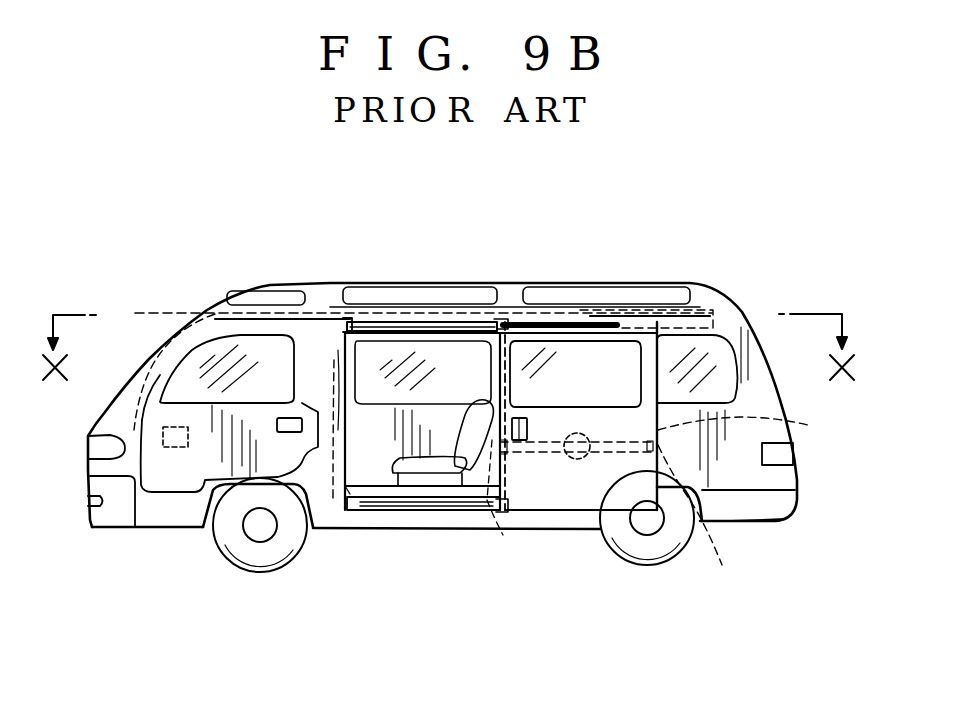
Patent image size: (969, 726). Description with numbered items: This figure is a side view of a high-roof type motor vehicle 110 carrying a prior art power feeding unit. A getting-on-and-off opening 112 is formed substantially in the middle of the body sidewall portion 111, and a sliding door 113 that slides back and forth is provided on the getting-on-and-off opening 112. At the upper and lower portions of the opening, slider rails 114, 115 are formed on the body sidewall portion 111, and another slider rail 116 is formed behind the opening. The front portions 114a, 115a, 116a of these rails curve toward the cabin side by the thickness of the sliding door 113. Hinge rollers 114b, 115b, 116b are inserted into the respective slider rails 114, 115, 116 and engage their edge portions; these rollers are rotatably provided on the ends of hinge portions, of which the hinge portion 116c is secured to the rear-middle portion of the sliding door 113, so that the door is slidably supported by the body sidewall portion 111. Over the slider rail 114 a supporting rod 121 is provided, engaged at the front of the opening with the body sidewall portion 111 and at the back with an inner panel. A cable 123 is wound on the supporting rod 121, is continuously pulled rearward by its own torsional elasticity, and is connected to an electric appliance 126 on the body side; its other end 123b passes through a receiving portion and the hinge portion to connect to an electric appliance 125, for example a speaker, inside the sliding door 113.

The motor vehicle 110 is at (566, 245).
The body sidewall portion 111 is at (747, 470).
The getting-on-and-off opening 112 is at (328, 500).
The sliding door 113 is at (632, 480).
The slider rail 114 is at (410, 322).
The front portion of slider rail 114a is at (352, 318).
The hinge roller 114b is at (494, 318).
The slider rail 115 is at (453, 500).
The front portion of slider rail 115a is at (363, 508).
The hinge roller 115b is at (517, 512).
The slider rail 116 is at (550, 470).
The front portion of slider rail 116a is at (503, 535).
The hinge roller 116b is at (769, 425).
The hinge portion 116c is at (721, 520).
The supporting rod 121 is at (373, 341).
The cable 123 is at (590, 318).
The other end of cable 123b is at (575, 374).
The electric appliance 125 is at (583, 462).
The electric appliance 126 is at (176, 448).